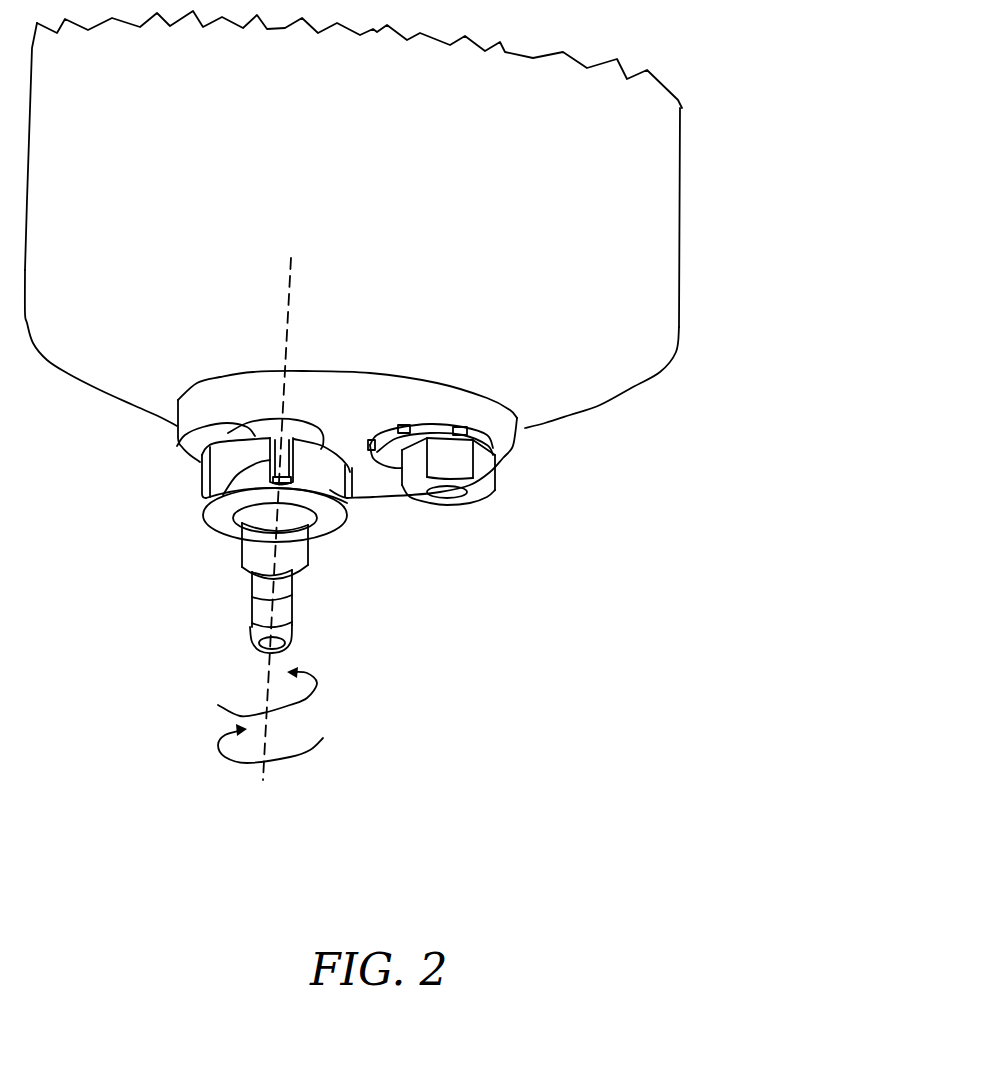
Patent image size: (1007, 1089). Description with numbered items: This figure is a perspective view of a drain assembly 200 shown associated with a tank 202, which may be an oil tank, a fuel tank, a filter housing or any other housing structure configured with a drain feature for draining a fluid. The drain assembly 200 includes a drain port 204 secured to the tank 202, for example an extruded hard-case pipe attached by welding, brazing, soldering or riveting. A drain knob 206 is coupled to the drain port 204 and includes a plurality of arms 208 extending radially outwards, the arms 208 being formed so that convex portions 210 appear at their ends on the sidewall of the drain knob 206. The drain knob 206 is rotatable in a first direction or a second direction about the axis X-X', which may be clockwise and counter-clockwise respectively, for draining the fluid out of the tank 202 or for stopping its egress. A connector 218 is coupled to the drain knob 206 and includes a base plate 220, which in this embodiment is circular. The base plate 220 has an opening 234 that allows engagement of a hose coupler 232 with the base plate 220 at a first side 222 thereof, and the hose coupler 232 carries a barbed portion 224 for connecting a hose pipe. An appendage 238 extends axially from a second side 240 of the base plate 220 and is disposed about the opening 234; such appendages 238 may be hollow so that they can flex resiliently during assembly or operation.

The drain assembly 200 is at (398, 407).
The tank 202 is at (668, 207).
The drain port 204 is at (185, 442).
The drain knob 206 is at (197, 477).
The arms 208 is at (199, 493).
The convex portions 210 is at (225, 510).
The connector 218 is at (354, 527).
The base plate 220 is at (327, 528).
The first side 222 is at (252, 507).
The barbed portion 224 is at (256, 608).
The hose coupler 232 is at (290, 567).
The opening 234 is at (223, 523).
The appendage 238 is at (337, 475).
The second side 240 is at (347, 492).